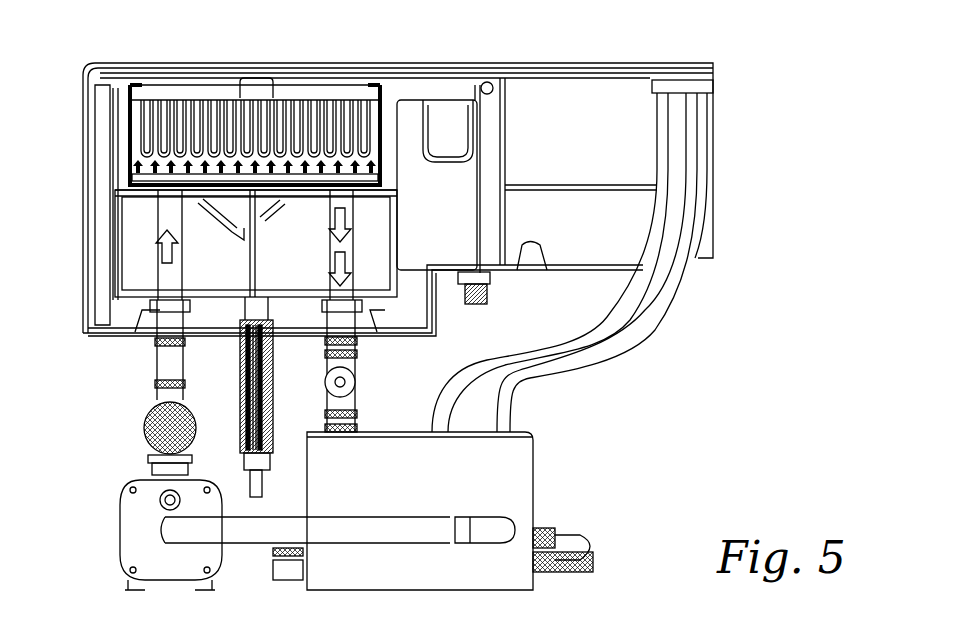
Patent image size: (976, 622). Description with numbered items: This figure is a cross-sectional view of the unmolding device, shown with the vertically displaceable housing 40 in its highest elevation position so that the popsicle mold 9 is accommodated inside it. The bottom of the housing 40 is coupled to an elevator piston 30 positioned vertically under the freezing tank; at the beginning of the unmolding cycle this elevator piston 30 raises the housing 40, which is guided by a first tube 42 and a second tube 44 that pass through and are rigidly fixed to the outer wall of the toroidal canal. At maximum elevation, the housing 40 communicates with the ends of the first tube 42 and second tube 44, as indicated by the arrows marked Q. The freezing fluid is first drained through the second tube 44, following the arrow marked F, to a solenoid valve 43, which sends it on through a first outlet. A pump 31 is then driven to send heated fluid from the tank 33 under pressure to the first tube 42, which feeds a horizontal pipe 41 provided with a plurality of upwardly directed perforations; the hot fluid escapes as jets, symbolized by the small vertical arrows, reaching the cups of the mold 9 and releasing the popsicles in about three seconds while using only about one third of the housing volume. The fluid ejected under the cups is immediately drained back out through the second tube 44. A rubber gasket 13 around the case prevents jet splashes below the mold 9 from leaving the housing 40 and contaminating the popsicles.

The rubber gasket 13 is at (115, 82).
The popsicle mold 9 is at (147, 112).
The housing 40 is at (128, 128).
The horizontal pipe 41 is at (140, 172).
The first tube 42 is at (167, 268).
The second tube 44 is at (348, 252).
The elevator piston 30 is at (252, 400).
The solenoid valve 43 is at (355, 382).
The pump 31 is at (137, 517).
The tank 33 is at (523, 479).